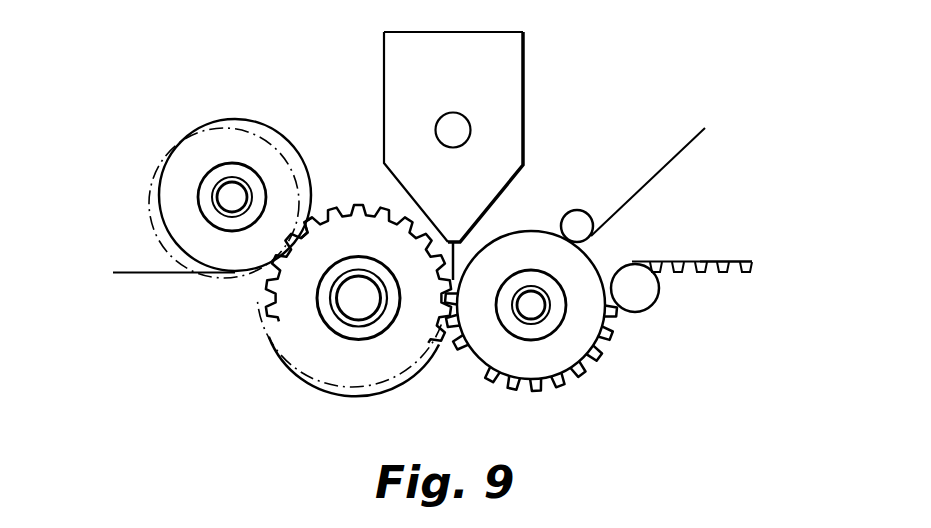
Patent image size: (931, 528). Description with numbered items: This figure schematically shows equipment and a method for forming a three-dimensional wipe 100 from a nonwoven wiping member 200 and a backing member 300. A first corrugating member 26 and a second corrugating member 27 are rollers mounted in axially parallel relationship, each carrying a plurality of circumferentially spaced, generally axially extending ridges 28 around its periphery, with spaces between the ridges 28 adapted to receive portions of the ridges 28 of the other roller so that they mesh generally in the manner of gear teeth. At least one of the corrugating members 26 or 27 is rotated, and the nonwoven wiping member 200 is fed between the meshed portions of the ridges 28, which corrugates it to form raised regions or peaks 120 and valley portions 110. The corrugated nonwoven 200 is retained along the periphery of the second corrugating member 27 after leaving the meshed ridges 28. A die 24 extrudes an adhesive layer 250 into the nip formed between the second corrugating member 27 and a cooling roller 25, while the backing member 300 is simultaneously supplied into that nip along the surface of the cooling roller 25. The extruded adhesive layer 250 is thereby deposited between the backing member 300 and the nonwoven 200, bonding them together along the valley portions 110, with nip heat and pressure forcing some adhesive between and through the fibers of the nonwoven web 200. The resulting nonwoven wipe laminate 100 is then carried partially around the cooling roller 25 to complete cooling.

The die 24 is at (500, 88).
The cooling roller 25 is at (507, 363).
The first corrugating member 26 is at (223, 142).
The second corrugating member 27 is at (290, 363).
The ridges 28 is at (304, 207).
The three-dimensional wipe 100 is at (669, 257).
The valley portions 110 is at (382, 205).
The raised regions or peaks 120 is at (420, 228).
The nonwoven wiping member 200 is at (149, 280).
The adhesive layer 250 is at (456, 256).
The backing member 300 is at (668, 162).